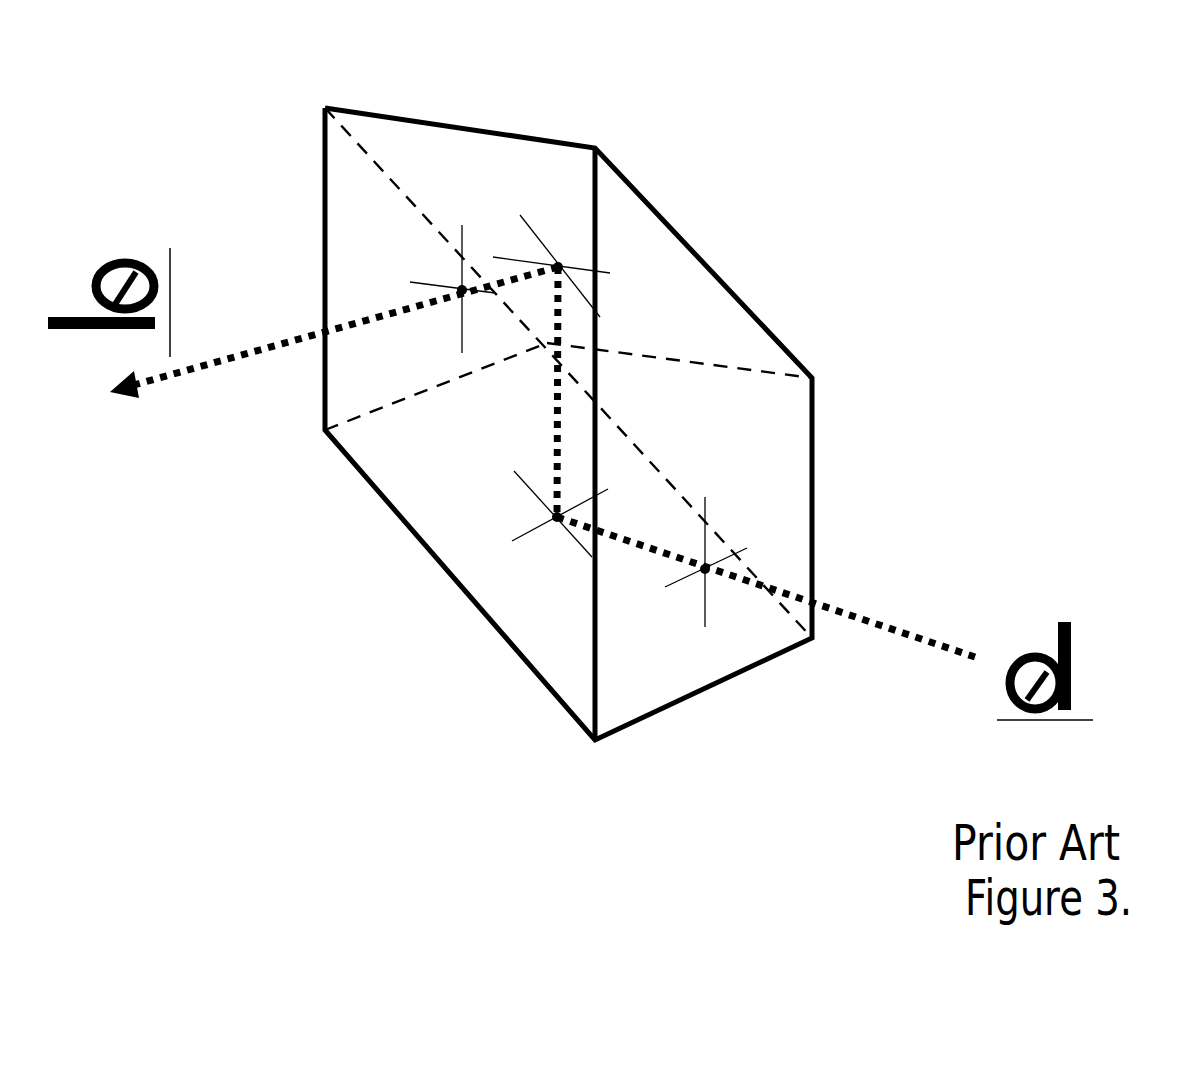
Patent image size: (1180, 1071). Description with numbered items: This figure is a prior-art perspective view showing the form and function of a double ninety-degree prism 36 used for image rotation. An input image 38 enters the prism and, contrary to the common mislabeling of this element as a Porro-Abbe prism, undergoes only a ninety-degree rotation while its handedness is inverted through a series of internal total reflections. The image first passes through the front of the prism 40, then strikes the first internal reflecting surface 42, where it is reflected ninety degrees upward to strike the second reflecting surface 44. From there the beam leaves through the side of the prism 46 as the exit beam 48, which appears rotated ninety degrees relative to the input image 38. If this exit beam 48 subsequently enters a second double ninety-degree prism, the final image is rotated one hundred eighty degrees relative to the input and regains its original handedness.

The double 90° prism 36 is at (323, 138).
The input image 38 is at (857, 618).
The front of the prism 40 is at (705, 569).
The first internal reflecting surface 42 is at (557, 517).
The second reflecting surface 44 is at (558, 267).
The side of the prism 46 is at (462, 290).
The exit beam 48 is at (303, 302).